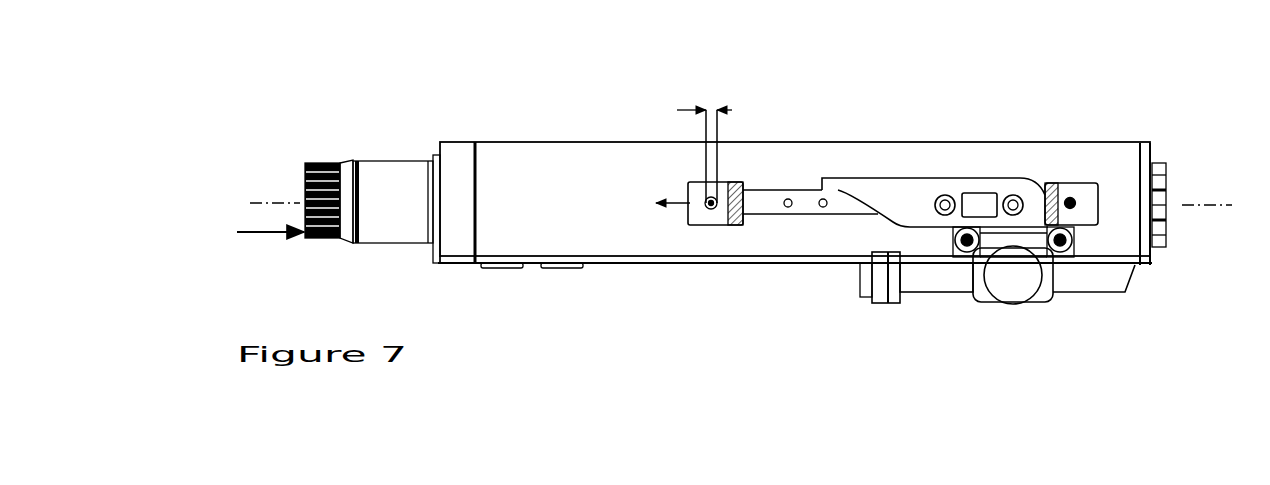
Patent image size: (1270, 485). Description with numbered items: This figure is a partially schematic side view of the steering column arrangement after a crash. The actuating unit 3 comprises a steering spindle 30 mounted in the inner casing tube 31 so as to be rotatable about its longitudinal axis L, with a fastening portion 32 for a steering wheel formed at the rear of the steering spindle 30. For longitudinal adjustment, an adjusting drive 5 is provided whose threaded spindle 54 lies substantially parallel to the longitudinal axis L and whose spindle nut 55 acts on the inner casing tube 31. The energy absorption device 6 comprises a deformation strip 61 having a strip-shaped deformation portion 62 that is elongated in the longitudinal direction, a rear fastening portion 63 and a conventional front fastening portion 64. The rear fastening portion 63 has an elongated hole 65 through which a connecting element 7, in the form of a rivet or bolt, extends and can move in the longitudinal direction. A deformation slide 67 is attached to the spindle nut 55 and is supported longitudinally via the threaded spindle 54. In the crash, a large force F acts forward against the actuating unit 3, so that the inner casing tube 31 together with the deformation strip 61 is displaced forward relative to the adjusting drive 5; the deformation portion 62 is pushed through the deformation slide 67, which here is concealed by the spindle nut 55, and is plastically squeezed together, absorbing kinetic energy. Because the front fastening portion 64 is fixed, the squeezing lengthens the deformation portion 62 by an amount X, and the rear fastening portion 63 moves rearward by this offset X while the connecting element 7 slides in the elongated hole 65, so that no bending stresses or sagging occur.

The actuating unit 3 is at (616, 128).
The second adjusting drive 5 is at (1075, 302).
The energy absorption device 6 is at (914, 164).
The connecting element 7 is at (720, 228).
The steering spindle 30 is at (388, 167).
The inner casing tube 31 is at (528, 160).
The fastening portion 32 is at (327, 162).
The threaded spindle 54 is at (942, 280).
The spindle nut 55 is at (1015, 288).
The deformation strip 61 is at (811, 186).
The deformation portion 62 is at (847, 190).
The fastening portion 63 is at (722, 137).
The fastening portion 64 is at (1087, 193).
The elongated hole 65 is at (705, 210).
The deformation slide 67 is at (981, 198).
The longitudinal axis L is at (258, 198).
The crash force F is at (262, 240).
The amount of lengthening X is at (683, 108).